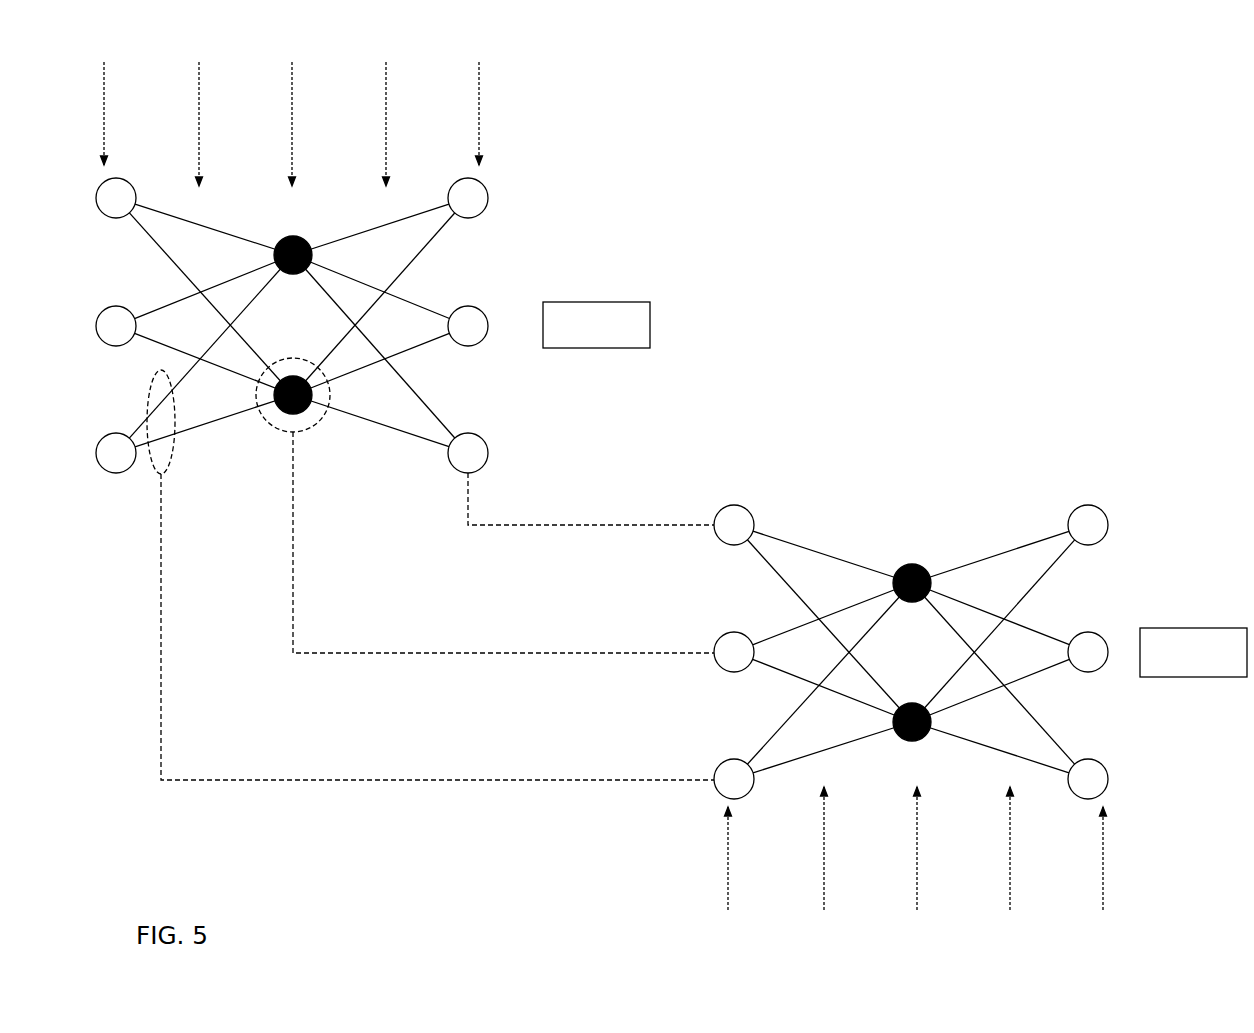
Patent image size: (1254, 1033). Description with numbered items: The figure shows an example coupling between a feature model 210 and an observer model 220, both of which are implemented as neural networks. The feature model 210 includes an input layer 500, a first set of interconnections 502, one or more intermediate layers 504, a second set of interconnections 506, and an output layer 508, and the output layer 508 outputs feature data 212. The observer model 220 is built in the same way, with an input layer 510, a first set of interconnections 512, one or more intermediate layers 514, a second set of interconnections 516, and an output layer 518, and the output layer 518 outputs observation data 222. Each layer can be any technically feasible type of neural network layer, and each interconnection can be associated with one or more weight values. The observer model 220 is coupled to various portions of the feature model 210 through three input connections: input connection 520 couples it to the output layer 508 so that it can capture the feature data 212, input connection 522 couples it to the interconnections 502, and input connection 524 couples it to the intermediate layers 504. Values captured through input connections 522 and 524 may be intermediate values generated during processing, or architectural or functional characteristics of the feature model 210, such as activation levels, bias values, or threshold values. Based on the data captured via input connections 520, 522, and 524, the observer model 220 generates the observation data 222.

The input layer 500 is at (105, 96).
The first set of interconnections 502 is at (200, 107).
The intermediate layers 504 is at (293, 107).
The second set of interconnections 506 is at (387, 107).
The output layer 508 is at (480, 96).
The input layer 510 is at (728, 879).
The first set of interconnections 512 is at (824, 869).
The intermediate layers 514 is at (917, 869).
The second set of interconnections 516 is at (1010, 869).
The output layer 518 is at (1103, 879).
The feature model 210 is at (533, 183).
The observer model 220 is at (1100, 461).
The feature data 212 is at (596, 325).
The observation data 222 is at (1193, 652).
The input connection 520 is at (604, 527).
The input connection 522 is at (391, 782).
The input connection 524 is at (475, 655).